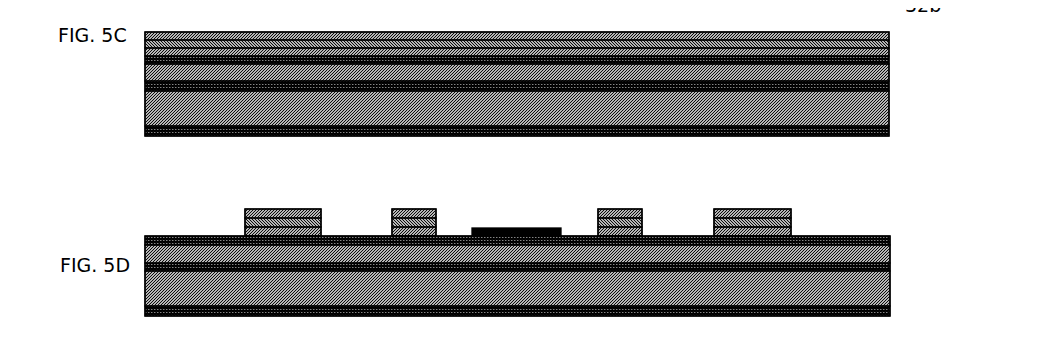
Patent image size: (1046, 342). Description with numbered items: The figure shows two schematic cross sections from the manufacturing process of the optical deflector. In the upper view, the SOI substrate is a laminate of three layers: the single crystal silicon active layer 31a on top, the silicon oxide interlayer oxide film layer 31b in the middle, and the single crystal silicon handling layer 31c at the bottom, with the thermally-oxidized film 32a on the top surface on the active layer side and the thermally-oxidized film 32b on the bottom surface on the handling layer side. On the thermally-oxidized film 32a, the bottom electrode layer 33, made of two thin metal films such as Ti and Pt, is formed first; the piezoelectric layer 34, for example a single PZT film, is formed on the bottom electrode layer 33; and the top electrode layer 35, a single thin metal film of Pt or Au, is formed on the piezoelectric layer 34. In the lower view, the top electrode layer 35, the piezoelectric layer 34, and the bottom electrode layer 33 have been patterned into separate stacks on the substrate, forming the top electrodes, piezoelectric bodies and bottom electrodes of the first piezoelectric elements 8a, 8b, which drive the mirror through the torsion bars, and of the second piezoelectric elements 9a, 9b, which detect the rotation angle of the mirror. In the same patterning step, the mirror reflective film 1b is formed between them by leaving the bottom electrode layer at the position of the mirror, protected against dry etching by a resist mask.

In FIG. 5D, the mirror reflective film 1b is at (507, 218).
In FIG. 5D, the first piezoelectric element 8a is at (274, 194).
In FIG. 5D, the first piezoelectric element 8b is at (742, 194).
In FIG. 5D, the second piezoelectric element 9a is at (406, 194).
In FIG. 5D, the second piezoelectric element 9b is at (612, 194).
In FIG. 5C, the active layer 31a is at (882, 65).
In FIG. 5D, the active layer 31a is at (882, 246).
In FIG. 5C, the interlayer oxide film layer 31b is at (882, 78).
In FIG. 5D, the interlayer oxide film layer 31b is at (882, 259).
In FIG. 5C, the handling layer 31c is at (882, 100).
In FIG. 5D, the handling layer 31c is at (882, 280).
In FIG. 5C, the thermally-oxidized film 32a is at (882, 51).
In FIG. 5D, the thermally-oxidized film 32a is at (882, 232).
In FIG. 5C, the thermally-oxidized film 32b is at (882, 123).
In FIG. 5D, the thermally-oxidized film 32b is at (882, 303).
In FIG. 5C, the bottom electrode layer 33 is at (137, 44).
In FIG. 5D, the bottom electrode layer 33 is at (237, 224).
In FIG. 5C, the piezoelectric layer 34 is at (137, 36).
In FIG. 5D, the piezoelectric layer 34 is at (237, 215).
In FIG. 5C, the top electrode layer 35 is at (137, 28).
In FIG. 5D, the top electrode layer 35 is at (237, 206).